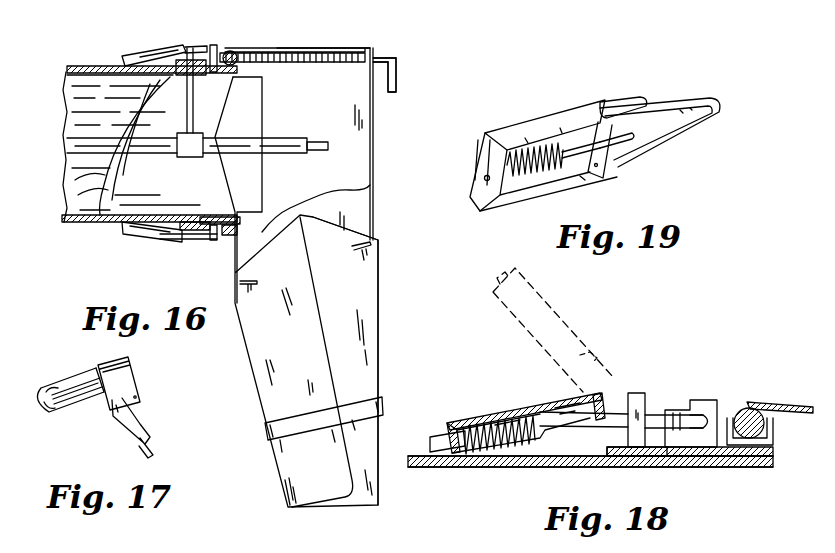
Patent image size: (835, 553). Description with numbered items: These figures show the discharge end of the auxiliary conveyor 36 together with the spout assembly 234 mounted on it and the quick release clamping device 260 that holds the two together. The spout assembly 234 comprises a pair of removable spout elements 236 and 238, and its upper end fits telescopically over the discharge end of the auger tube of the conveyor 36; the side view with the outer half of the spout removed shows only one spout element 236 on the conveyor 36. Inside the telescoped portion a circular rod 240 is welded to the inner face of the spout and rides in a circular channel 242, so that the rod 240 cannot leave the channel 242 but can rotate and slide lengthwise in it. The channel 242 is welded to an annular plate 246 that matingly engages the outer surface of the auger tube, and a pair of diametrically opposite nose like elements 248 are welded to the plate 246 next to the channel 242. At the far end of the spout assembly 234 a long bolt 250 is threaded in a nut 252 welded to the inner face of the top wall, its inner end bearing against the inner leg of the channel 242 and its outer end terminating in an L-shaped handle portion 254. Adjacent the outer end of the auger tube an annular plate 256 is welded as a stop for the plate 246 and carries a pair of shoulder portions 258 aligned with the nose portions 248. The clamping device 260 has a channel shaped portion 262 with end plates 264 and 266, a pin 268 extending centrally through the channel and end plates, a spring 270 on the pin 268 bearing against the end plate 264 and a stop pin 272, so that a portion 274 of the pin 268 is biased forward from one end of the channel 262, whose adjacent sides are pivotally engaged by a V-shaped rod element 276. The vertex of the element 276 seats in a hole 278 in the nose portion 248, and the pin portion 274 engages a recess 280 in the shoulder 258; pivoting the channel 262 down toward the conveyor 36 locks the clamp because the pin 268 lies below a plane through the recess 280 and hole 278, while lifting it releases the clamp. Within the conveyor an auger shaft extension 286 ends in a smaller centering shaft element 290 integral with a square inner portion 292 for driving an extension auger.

In FIG. 16, the auxiliary conveyor 36 is at (68, 223).
In FIG. 17, the auxiliary conveyor 36 is at (63, 377).
In FIG. 18, the auxiliary conveyor 36 is at (430, 468).
In FIG. 16, the spout assembly 234 is at (358, 45).
In FIG. 18, the spout assembly 234 is at (775, 437).
In FIG. 16, the spout element 236 is at (258, 376).
In FIG. 17, the spout element 236 is at (123, 425).
In FIG. 16, the spout element 238 is at (372, 360).
In FIG. 16, the circular rod 240 is at (232, 60).
In FIG. 18, the circular rod 240 is at (792, 408).
In FIG. 16, the circular channel 242 is at (225, 55).
In FIG. 18, the circular channel 242 is at (778, 448).
In FIG. 16, the annular plate 246 is at (247, 68).
In FIG. 18, the annular plate 246 is at (775, 455).
In FIG. 16, the nose like elements 248 is at (212, 45).
In FIG. 18, the nose like elements 248 is at (707, 400).
In FIG. 16, the long bolt 250 is at (384, 60).
In FIG. 16, the nut 252 is at (292, 45).
In FIG. 16, the L-shaped handle portion 254 is at (398, 78).
In FIG. 16, the annular plate 256 is at (163, 238).
In FIG. 18, the annular plate 256 is at (607, 452).
In FIG. 16, the shoulder portions 258 is at (192, 48).
In FIG. 18, the shoulder portions 258 is at (638, 393).
In FIG. 16, the quick release clamping device 260 is at (126, 50).
In FIG. 19, the quick release clamping device 260 is at (580, 150).
In FIG. 18, the quick release clamping device 260 is at (510, 405).
In FIG. 19, the channel shaped portion 262 is at (508, 133).
In FIG. 19, the end plate 264 is at (497, 158).
In FIG. 19, the end plate 266 is at (608, 172).
In FIG. 19, the pin 268 is at (484, 178).
In FIG. 19, the spring 270 is at (540, 173).
In FIG. 19, the stop pin 272 is at (563, 150).
In FIG. 19, the portion 274 is at (630, 137).
In FIG. 19, the V-shaped rod element 276 is at (675, 97).
In FIG. 18, the hole 278 is at (713, 408).
In FIG. 18, the recess 280 is at (658, 417).
In FIG. 16, the auger shaft extension 286 is at (288, 137).
In FIG. 16, the centering shaft element 290 is at (321, 151).
In FIG. 16, the inner portion 292 is at (283, 155).